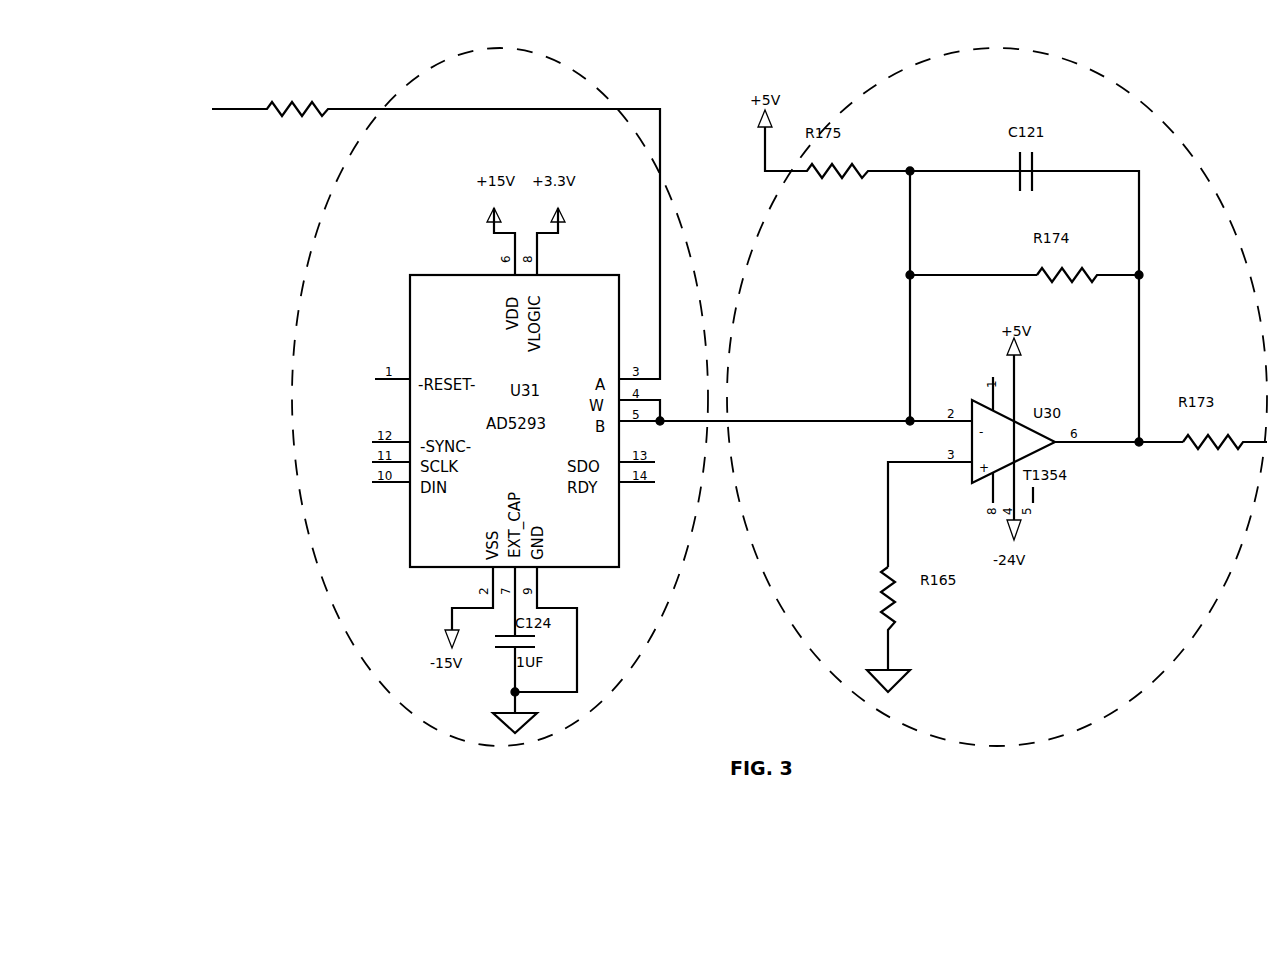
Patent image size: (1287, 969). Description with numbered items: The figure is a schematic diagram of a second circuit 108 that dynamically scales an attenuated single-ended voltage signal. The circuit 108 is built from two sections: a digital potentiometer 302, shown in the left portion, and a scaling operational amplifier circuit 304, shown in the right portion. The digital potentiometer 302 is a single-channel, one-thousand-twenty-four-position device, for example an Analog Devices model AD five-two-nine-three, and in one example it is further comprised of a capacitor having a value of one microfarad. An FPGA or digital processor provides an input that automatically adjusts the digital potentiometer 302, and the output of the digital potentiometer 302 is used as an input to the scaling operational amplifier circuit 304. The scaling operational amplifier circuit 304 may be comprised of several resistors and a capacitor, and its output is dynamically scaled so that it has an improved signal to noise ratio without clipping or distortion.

The second circuit 108 is at (501, 213).
The digital potentiometer 302 is at (471, 397).
The scaling operational amplifier circuit 304 is at (985, 397).